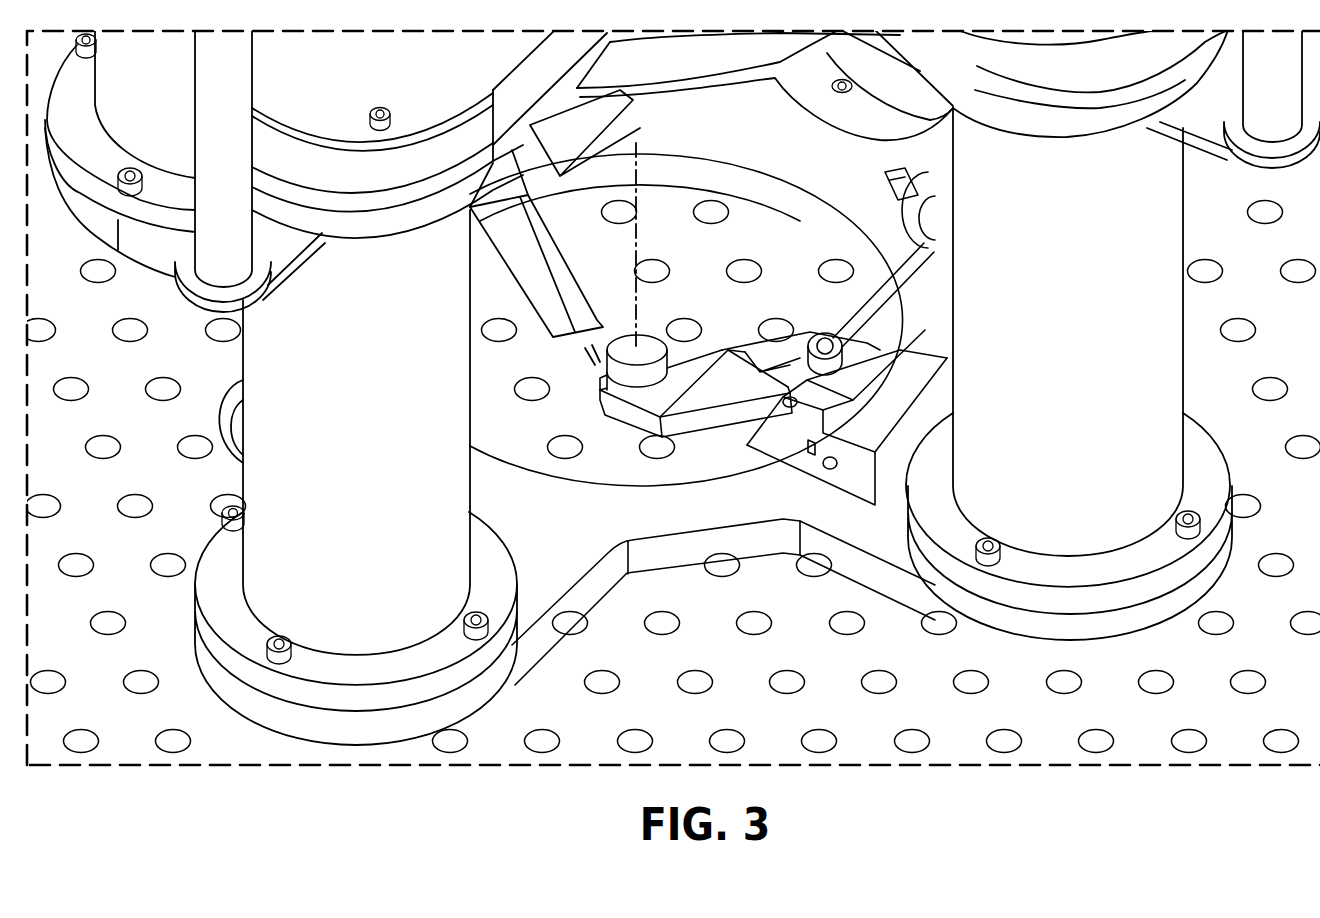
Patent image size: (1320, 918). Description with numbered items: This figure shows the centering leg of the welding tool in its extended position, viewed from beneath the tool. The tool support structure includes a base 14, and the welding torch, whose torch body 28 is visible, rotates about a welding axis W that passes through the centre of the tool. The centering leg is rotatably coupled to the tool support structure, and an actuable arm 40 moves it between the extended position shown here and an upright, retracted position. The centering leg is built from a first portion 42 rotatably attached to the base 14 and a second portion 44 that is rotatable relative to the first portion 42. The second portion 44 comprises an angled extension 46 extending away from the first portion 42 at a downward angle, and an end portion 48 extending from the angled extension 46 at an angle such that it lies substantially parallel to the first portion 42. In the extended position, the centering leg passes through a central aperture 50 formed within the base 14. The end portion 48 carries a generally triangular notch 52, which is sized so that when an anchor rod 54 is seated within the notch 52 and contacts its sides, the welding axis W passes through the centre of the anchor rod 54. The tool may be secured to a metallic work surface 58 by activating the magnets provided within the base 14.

The base 14 is at (541, 529).
The torch body 28 is at (530, 248).
The actuable arm 40 is at (913, 268).
The first portion 42 is at (870, 378).
The second portion 44 is at (702, 412).
The angled extension 46 is at (737, 358).
The end portion 48 is at (703, 350).
The central aperture 50 is at (741, 252).
The notch 52 is at (605, 377).
The anchor rod 54 is at (622, 338).
The metallic work surface 58 is at (921, 693).
The welding axis W is at (636, 172).